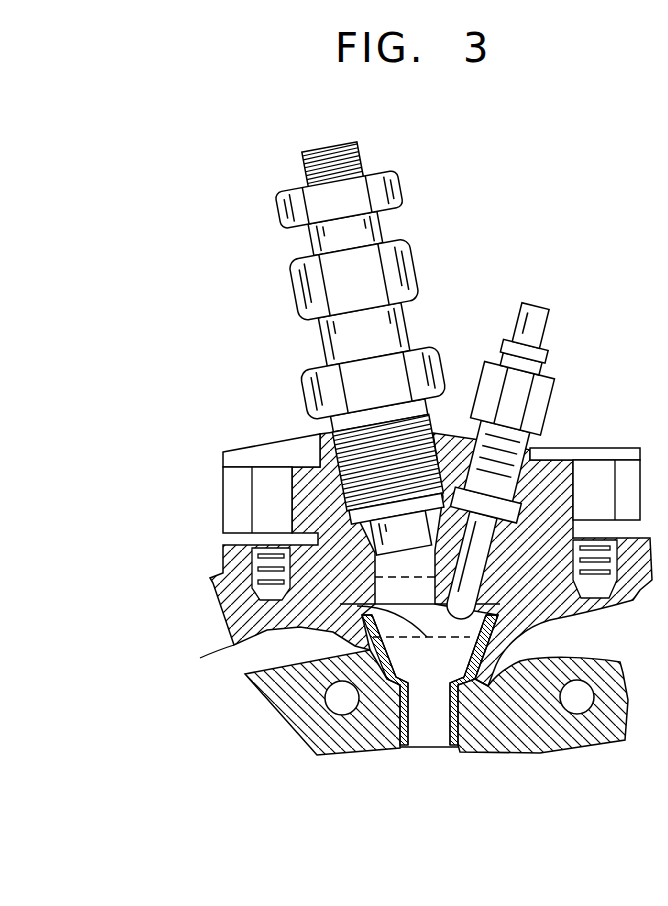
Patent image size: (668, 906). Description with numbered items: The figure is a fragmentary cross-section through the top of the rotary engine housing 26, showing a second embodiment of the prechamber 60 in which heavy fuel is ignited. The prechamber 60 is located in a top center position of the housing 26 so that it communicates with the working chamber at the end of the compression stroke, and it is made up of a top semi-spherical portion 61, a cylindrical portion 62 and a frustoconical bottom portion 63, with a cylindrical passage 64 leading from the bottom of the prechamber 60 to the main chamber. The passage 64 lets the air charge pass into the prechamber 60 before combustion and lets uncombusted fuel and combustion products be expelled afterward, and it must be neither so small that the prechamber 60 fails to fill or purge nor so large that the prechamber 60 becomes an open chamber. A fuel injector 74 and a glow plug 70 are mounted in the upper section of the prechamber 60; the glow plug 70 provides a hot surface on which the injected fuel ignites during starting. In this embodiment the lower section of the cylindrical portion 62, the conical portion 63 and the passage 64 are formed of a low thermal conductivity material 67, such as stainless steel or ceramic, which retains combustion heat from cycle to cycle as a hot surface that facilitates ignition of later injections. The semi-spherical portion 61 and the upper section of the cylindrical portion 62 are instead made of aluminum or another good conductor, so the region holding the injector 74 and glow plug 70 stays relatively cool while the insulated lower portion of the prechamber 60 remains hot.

The housing 26 is at (186, 577).
The prechamber 60 is at (283, 627).
The top semi-spherical portion 61 is at (407, 593).
The cylindrical portion 62 is at (413, 638).
The frustoconical bottom portion 63 is at (436, 749).
The cylindrical passage 64 is at (420, 713).
The low thermal conductivity material 67 is at (368, 749).
The glow plug 70 is at (550, 328).
The fuel injector 74 is at (417, 267).